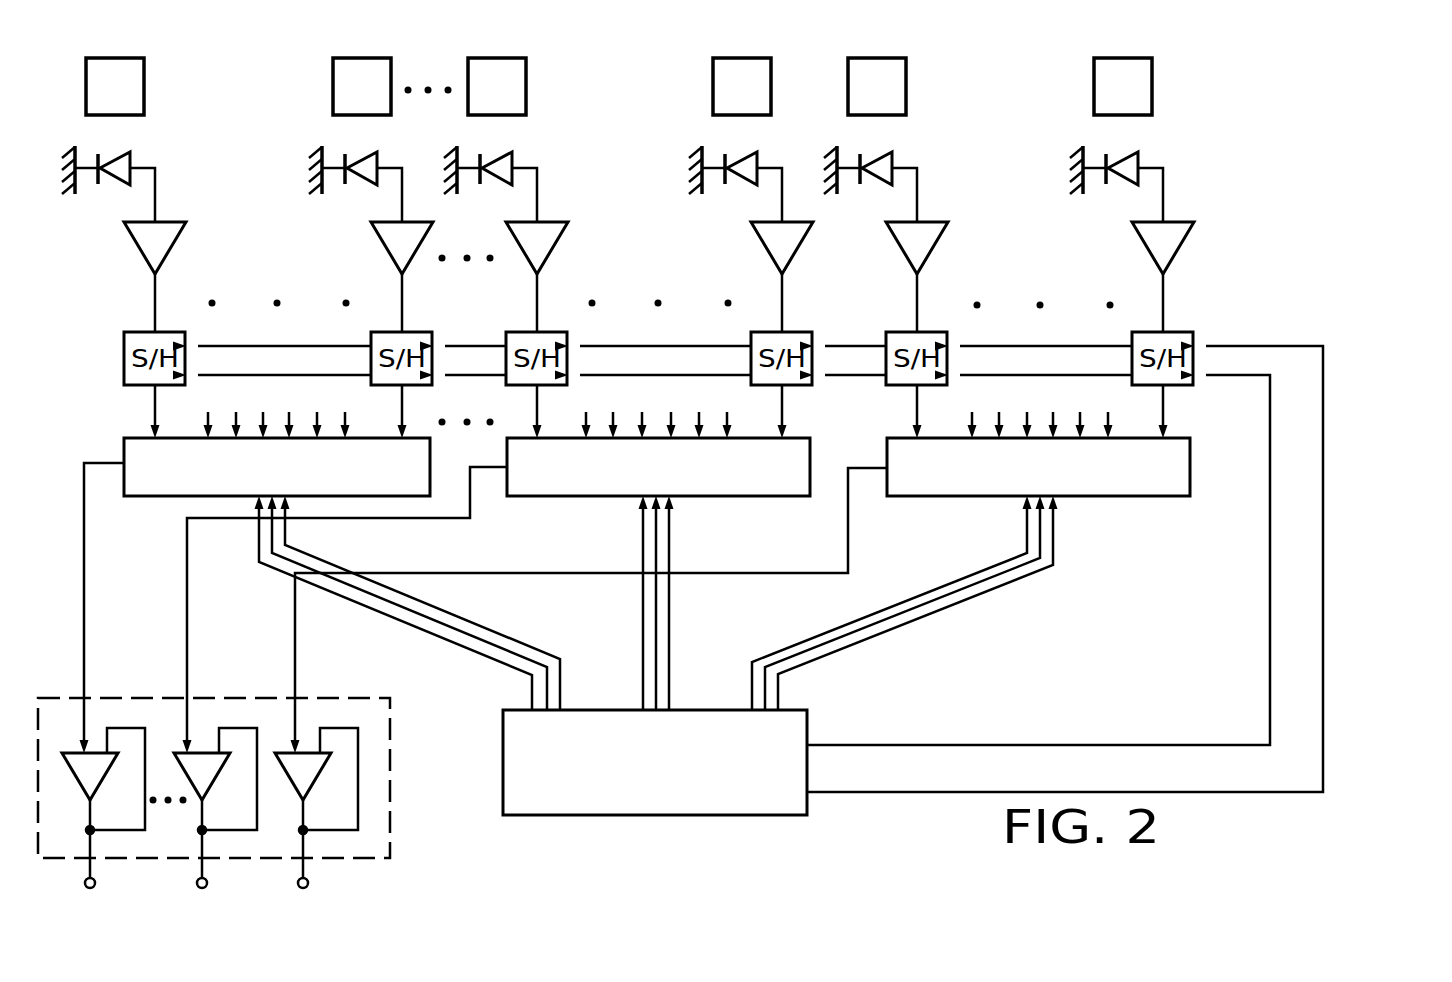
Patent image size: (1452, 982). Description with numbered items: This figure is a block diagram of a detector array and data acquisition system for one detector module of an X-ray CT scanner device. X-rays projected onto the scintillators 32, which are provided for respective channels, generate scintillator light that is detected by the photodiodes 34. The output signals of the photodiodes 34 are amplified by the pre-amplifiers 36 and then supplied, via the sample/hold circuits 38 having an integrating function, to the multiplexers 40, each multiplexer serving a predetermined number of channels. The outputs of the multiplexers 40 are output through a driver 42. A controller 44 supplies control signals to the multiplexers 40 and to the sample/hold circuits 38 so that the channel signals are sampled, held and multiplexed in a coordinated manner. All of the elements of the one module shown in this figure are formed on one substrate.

The scintillator 32 is at (1162, 87).
The photodiode 34 is at (1156, 160).
The pre-amplifier 36 is at (1198, 254).
The sample/hold circuit 38 is at (1196, 326).
The multiplexer 40 is at (1110, 511).
The driver 42 is at (337, 698).
The controller 44 is at (731, 817).